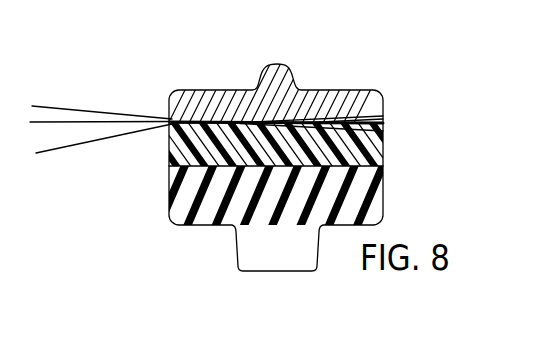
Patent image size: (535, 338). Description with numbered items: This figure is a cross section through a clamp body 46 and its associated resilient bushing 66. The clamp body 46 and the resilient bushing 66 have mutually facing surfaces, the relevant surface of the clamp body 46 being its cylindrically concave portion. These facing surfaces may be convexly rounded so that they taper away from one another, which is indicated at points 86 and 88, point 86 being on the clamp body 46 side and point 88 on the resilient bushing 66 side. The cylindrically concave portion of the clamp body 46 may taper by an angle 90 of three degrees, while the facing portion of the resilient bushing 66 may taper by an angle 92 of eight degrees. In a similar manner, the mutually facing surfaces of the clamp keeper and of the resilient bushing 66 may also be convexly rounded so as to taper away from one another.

The clamp body 46 is at (355, 106).
The point 86 is at (168, 113).
The point 88 is at (373, 122).
The resilient bushing 66 is at (375, 200).
The angle 90 is at (32, 107).
The angle 92 is at (38, 151).